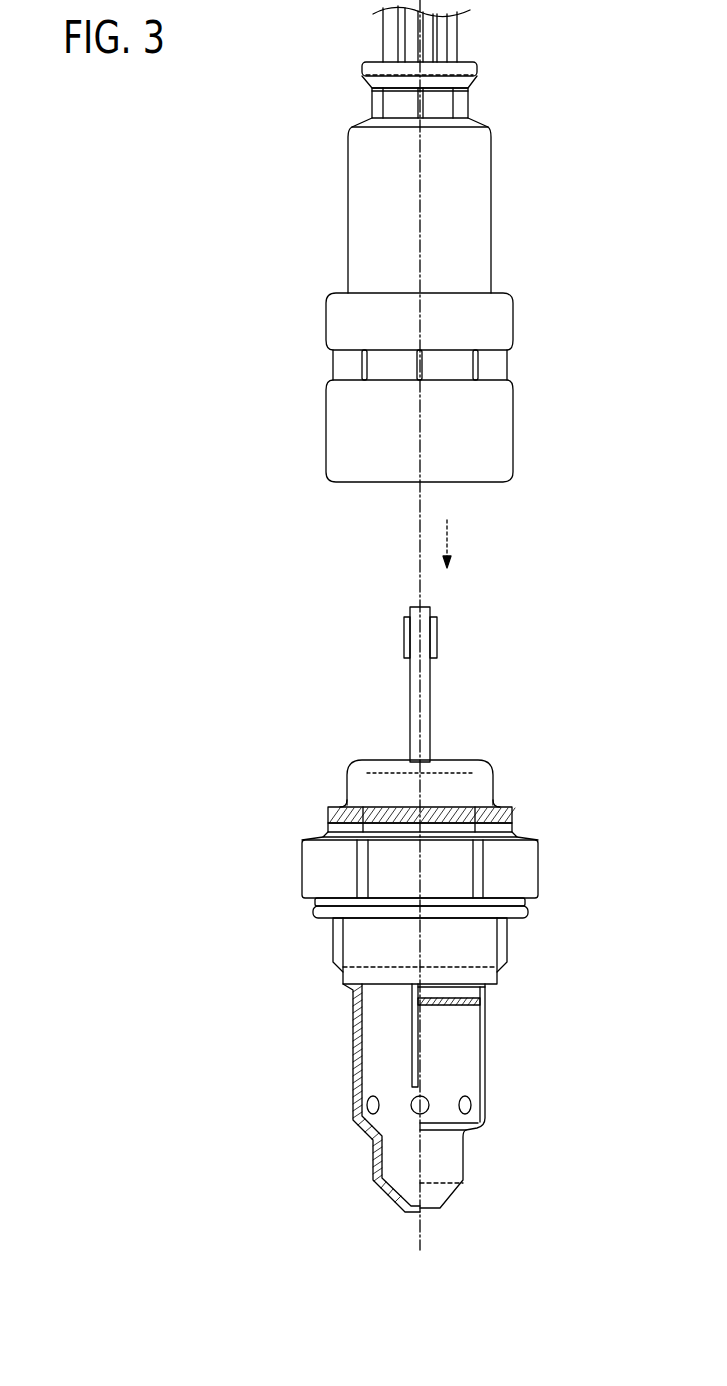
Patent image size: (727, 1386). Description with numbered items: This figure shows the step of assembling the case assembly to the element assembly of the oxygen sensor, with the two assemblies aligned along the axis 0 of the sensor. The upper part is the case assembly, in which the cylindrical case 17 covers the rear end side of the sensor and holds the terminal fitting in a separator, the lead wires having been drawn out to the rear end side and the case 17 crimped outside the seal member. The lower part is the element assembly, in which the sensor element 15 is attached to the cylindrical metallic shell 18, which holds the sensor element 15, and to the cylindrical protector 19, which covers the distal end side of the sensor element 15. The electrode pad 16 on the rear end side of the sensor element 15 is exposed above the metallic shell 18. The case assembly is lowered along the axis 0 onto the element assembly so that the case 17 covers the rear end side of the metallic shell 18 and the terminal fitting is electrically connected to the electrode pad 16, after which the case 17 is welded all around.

The axis 0 is at (420, 1235).
The sensor element 15 is at (412, 1053).
The electrode pad 16 is at (480, 668).
The case 17 is at (498, 425).
The metallic shell 18 is at (528, 872).
The protector 19 is at (478, 1073).